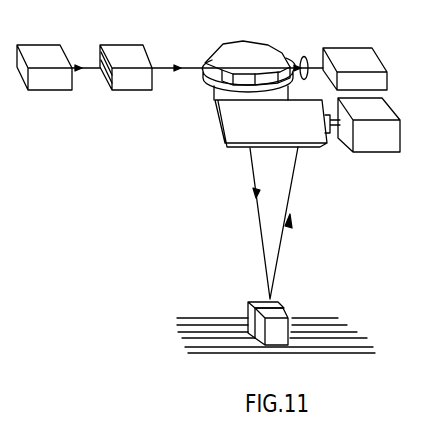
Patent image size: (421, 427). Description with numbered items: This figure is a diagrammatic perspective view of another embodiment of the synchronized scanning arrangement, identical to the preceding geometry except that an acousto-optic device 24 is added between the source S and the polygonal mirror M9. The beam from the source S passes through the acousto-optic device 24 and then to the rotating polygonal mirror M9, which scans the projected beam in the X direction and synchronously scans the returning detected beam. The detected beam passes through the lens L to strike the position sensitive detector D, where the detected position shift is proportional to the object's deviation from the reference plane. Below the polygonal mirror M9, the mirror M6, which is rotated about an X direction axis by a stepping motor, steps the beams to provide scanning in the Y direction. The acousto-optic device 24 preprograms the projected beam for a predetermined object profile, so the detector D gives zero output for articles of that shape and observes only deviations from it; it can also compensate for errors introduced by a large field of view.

The source S is at (44, 67).
The acousto-optic device 24 is at (125, 53).
The polygonal mirror M9 is at (260, 48).
The lens L is at (305, 57).
The detector D is at (355, 69).
The mirror M6 is at (318, 140).